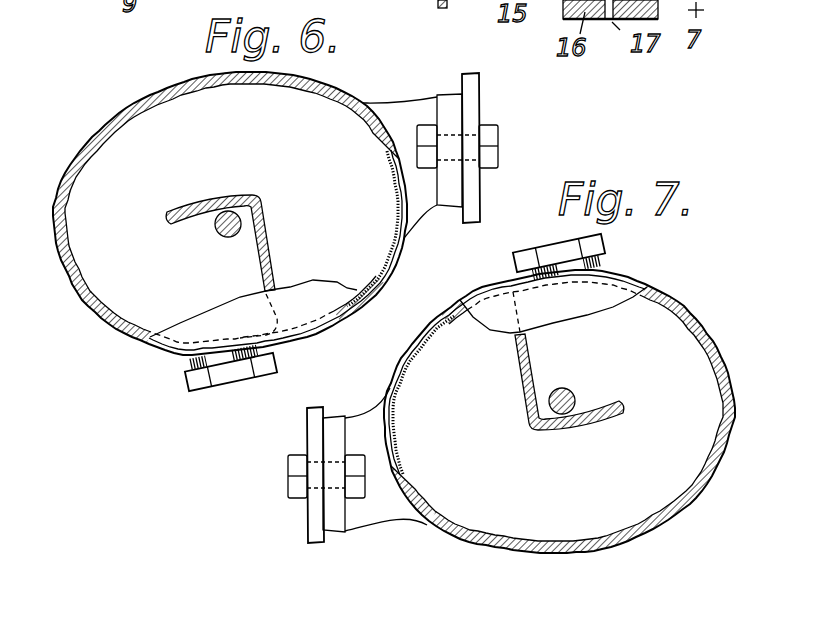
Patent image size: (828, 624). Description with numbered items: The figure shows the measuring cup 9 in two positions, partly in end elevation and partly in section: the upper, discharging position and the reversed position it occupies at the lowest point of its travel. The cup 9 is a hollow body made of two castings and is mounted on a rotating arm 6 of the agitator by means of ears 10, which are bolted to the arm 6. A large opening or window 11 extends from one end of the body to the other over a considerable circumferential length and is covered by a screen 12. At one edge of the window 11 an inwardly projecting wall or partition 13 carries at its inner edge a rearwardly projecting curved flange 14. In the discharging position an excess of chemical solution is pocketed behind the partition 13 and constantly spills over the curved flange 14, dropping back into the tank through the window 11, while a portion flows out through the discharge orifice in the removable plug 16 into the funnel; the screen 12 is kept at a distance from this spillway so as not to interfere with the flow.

In FIG. 6, the arm 6 is at (467, 207).
In FIG. 7, the arm 6 is at (312, 418).
In FIG. 6, the cup 9 is at (126, 106).
In FIG. 7, the cup 9 is at (507, 552).
In FIG. 6, the ears 10 is at (457, 112).
In FIG. 7, the ears 10 is at (333, 520).
In FIG. 6, the opening or window 11 is at (370, 283).
In FIG. 7, the opening or window 11 is at (413, 343).
In FIG. 6, the screen 12 is at (377, 240).
In FIG. 7, the screen 12 is at (408, 390).
In FIG. 6, the wall or partition 13 is at (272, 253).
In FIG. 7, the wall or partition 13 is at (522, 370).
In FIG. 6, the curved flange 14 is at (193, 207).
In FIG. 7, the curved flange 14 is at (593, 420).
In FIG. 6, the removable plug 16 is at (223, 380).
In FIG. 7, the removable plug 16 is at (545, 250).